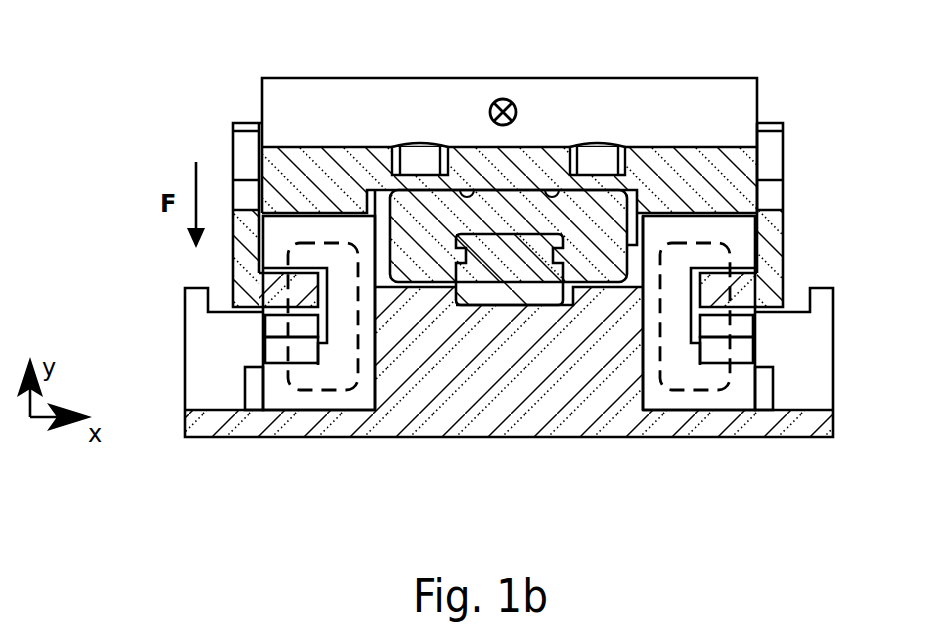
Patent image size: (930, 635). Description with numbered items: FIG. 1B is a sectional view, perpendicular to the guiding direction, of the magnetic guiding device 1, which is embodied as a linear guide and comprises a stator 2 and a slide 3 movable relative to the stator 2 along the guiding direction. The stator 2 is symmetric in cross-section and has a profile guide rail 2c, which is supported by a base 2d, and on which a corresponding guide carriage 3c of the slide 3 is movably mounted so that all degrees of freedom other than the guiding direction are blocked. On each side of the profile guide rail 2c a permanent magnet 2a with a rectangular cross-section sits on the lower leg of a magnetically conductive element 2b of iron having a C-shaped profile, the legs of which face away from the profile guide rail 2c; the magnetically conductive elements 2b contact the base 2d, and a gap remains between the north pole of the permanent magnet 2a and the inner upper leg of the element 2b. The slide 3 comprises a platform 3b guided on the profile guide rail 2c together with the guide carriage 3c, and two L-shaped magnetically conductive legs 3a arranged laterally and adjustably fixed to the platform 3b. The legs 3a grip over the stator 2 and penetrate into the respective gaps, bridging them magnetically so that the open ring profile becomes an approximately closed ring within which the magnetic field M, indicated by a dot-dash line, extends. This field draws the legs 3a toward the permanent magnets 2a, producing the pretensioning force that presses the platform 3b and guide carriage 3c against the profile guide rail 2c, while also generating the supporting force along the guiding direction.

The magnetic guiding device 1 is at (111, 114).
The stator 2 is at (513, 470).
The permanent magnet 2a is at (270, 343).
The magnetically conductive element 2b is at (302, 397).
The profile guide rail 2c is at (517, 277).
The base 2d is at (540, 397).
The slide 3 is at (325, 39).
The legs 3a is at (233, 284).
The platform 3b is at (475, 162).
The guide carriage 3c is at (427, 217).
The magnetic field M is at (322, 390).